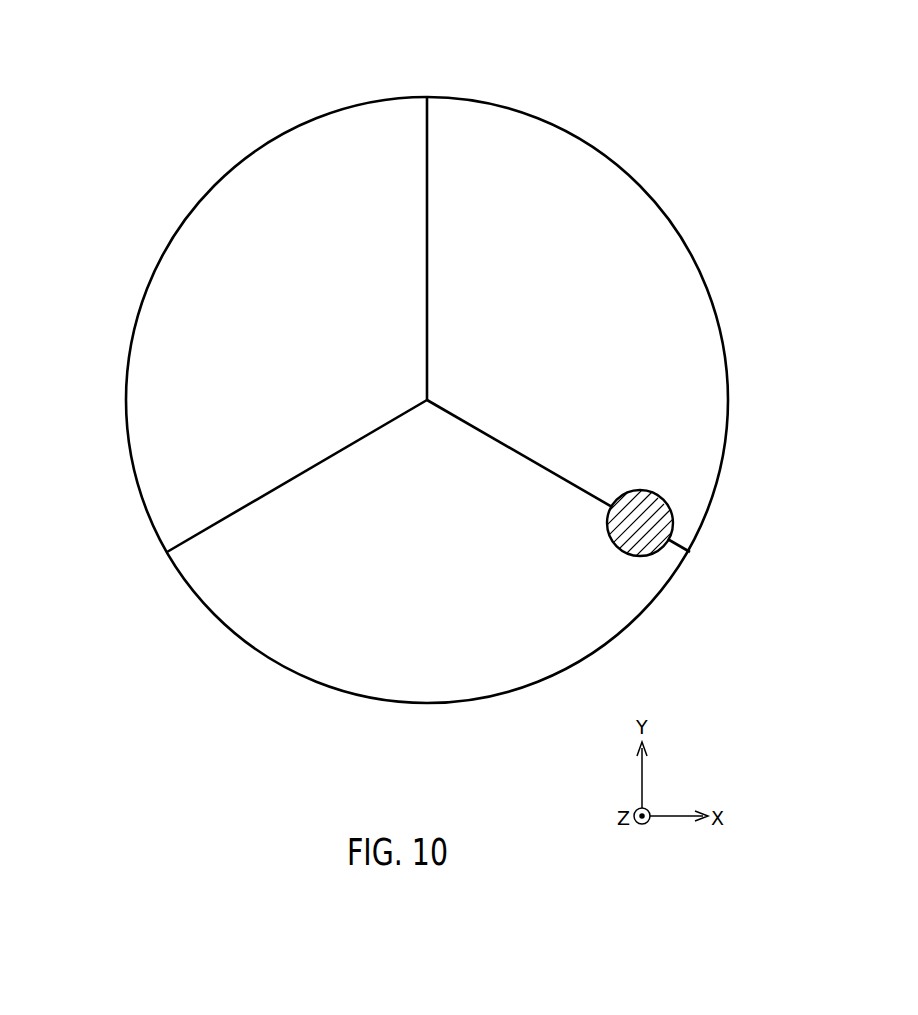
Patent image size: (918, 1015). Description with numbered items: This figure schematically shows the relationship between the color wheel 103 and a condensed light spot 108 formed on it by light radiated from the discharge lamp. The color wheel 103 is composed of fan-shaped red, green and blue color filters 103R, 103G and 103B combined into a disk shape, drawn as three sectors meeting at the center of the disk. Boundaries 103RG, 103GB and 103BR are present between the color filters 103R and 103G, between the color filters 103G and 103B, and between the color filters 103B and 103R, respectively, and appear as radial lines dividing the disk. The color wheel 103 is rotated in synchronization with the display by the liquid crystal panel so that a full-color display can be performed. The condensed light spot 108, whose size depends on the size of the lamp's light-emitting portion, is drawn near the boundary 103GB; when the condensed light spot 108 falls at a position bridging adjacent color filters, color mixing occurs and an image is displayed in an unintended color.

The color wheel 103 is at (348, 104).
The red color filter 103R is at (212, 205).
The green color filter 103G is at (642, 207).
The blue color filter 103B is at (440, 693).
The boundary 103RG is at (427, 160).
The boundary 103GB is at (545, 468).
The boundary 103BR is at (232, 512).
The condensed light spot 108 is at (645, 537).